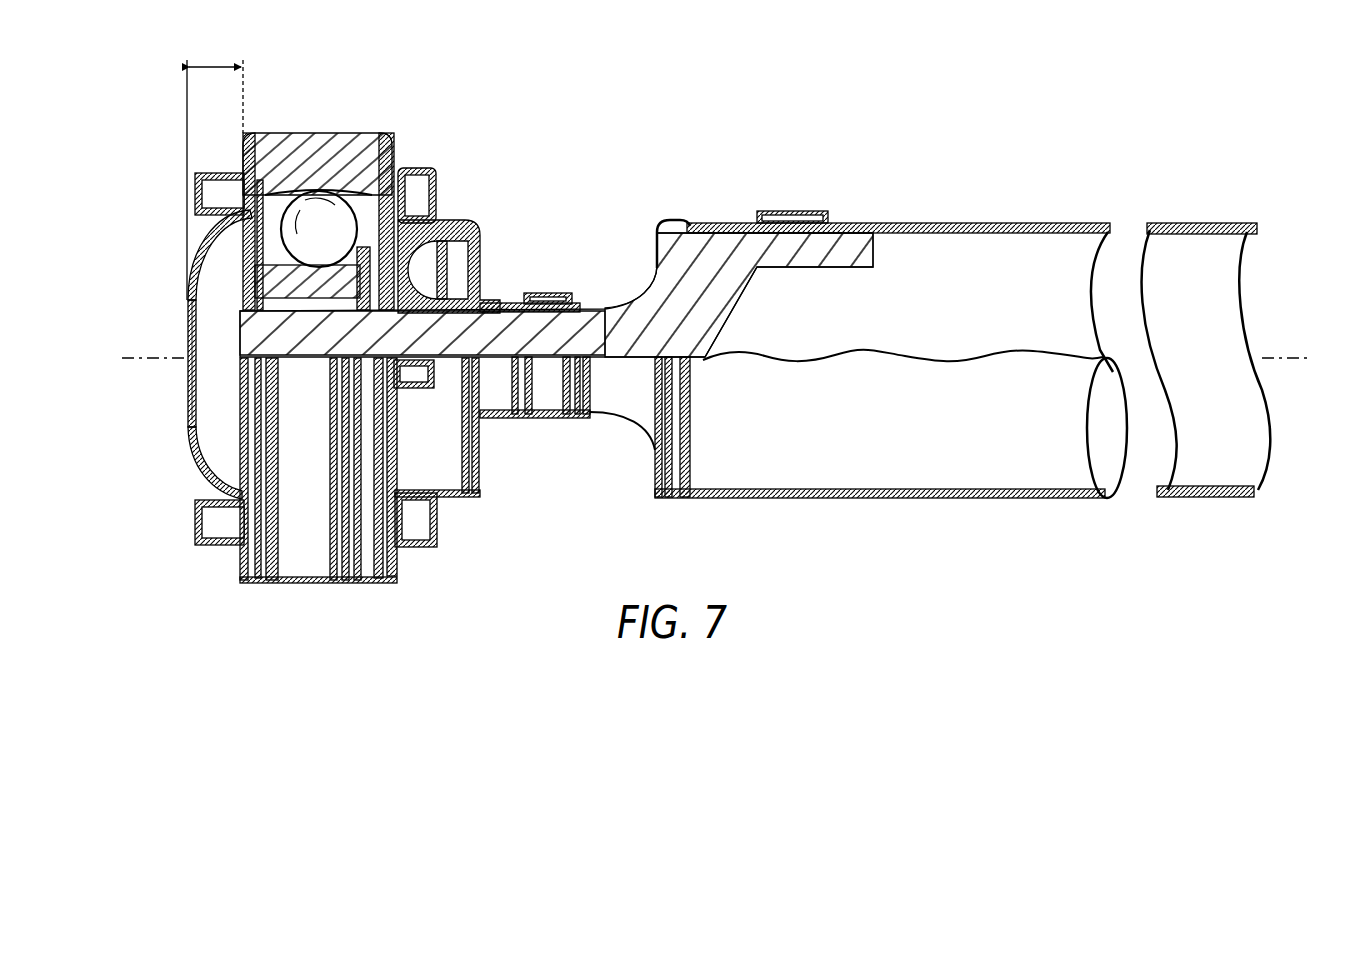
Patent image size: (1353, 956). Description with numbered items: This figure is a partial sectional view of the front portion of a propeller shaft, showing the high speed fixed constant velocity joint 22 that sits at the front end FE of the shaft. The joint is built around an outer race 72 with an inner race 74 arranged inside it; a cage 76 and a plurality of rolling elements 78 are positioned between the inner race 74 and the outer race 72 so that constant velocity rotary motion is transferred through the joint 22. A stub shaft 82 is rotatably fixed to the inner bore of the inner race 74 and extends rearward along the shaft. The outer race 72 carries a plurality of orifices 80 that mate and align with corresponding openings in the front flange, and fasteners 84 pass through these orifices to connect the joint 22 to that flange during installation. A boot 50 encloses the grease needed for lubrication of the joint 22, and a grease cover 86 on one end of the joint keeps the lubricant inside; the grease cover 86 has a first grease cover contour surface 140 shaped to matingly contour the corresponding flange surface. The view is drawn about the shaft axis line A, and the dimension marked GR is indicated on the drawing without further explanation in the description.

The high speed fixed constant velocity joint 22 is at (310, 319).
The boot 50 is at (755, 309).
The outer race 72 is at (312, 133).
The inner race 74 is at (305, 293).
The cage 76 is at (413, 207).
The rolling elements 78 is at (303, 222).
The orifices 80 is at (398, 163).
The stub shaft 82 is at (590, 337).
The fasteners 84 is at (437, 187).
The grease cover 86 is at (190, 440).
The first grease cover contour surface 140 is at (184, 384).
The front end FE is at (700, 223).
The gap dimension GR is at (215, 165).
The axis A is at (714, 358).